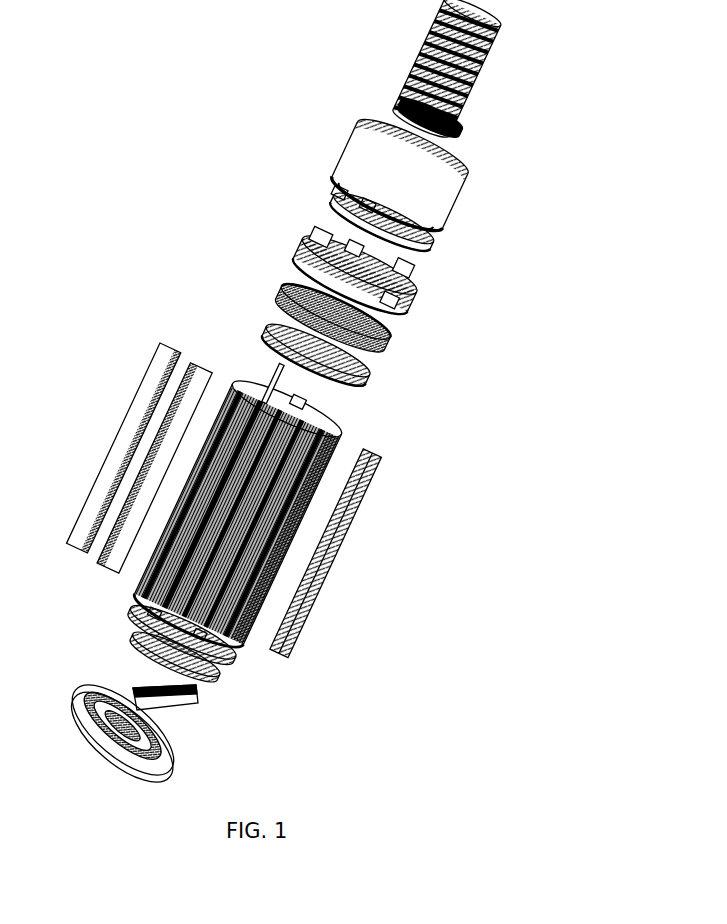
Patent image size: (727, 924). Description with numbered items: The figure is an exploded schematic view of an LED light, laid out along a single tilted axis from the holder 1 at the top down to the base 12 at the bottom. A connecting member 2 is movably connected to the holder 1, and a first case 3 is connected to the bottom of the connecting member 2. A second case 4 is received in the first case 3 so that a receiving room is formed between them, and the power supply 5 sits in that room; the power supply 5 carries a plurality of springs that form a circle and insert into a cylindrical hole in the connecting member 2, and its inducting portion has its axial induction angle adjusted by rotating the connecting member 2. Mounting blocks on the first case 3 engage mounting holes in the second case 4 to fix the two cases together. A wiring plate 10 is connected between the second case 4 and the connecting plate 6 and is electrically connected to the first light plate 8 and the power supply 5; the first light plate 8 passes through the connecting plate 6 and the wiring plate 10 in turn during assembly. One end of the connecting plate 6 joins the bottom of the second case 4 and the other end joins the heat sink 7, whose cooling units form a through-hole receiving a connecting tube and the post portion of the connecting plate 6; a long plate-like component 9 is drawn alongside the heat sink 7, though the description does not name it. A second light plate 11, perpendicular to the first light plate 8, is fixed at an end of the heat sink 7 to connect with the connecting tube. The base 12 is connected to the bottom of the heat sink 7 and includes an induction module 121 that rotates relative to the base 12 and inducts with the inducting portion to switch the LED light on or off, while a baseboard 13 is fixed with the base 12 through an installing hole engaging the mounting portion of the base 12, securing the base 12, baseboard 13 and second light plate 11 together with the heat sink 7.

The holder 1 is at (493, 50).
The connecting member 2 is at (467, 108).
The first case 3 is at (430, 163).
The second case 4 is at (384, 271).
The power supply 5 is at (423, 237).
The connecting plate 6 is at (390, 348).
The heat sink 7 is at (340, 430).
The first light plate 8 is at (297, 493).
The cover plate 9 is at (310, 590).
The wiring plate 10 is at (370, 382).
The second light plate 11 is at (190, 637).
The base 12 is at (170, 740).
The induction module 121 is at (187, 703).
The baseboard 13 is at (173, 623).